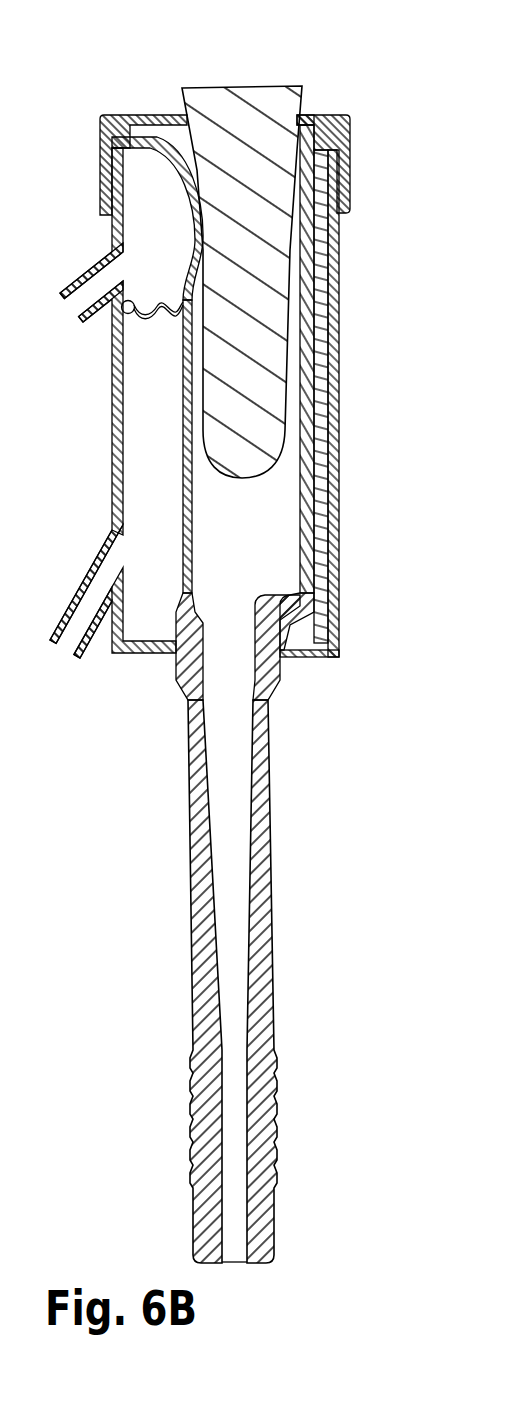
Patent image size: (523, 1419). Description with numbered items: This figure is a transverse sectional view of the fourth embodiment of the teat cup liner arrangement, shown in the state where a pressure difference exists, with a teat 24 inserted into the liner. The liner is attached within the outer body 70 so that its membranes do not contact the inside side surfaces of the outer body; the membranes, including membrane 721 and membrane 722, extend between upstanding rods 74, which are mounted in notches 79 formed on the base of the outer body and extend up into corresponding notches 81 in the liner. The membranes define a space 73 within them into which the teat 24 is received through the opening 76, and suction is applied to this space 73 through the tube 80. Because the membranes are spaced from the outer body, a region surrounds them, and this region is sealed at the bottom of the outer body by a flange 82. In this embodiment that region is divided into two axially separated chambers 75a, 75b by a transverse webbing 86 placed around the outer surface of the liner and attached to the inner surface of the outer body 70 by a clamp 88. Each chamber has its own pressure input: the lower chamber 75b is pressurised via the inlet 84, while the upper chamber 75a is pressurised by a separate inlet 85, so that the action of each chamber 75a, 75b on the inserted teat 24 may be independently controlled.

The opening 76 is at (300, 117).
The notch in the liner 81 is at (347, 133).
The chamber 75a is at (140, 197).
The chamber 75b is at (143, 445).
The inlet 85 is at (80, 300).
The inlet 84 is at (65, 648).
The clamp 88 is at (124, 313).
The transverse webbing 86 is at (150, 318).
The teat 24 is at (274, 302).
The membrane 721 is at (183, 492).
The space 73 is at (291, 467).
The upstanding rod 74 is at (325, 617).
The outer body 70 is at (334, 505).
The notch 79 is at (317, 656).
The membrane 722 is at (311, 570).
The flange 82 is at (176, 668).
The tube 80 is at (261, 944).